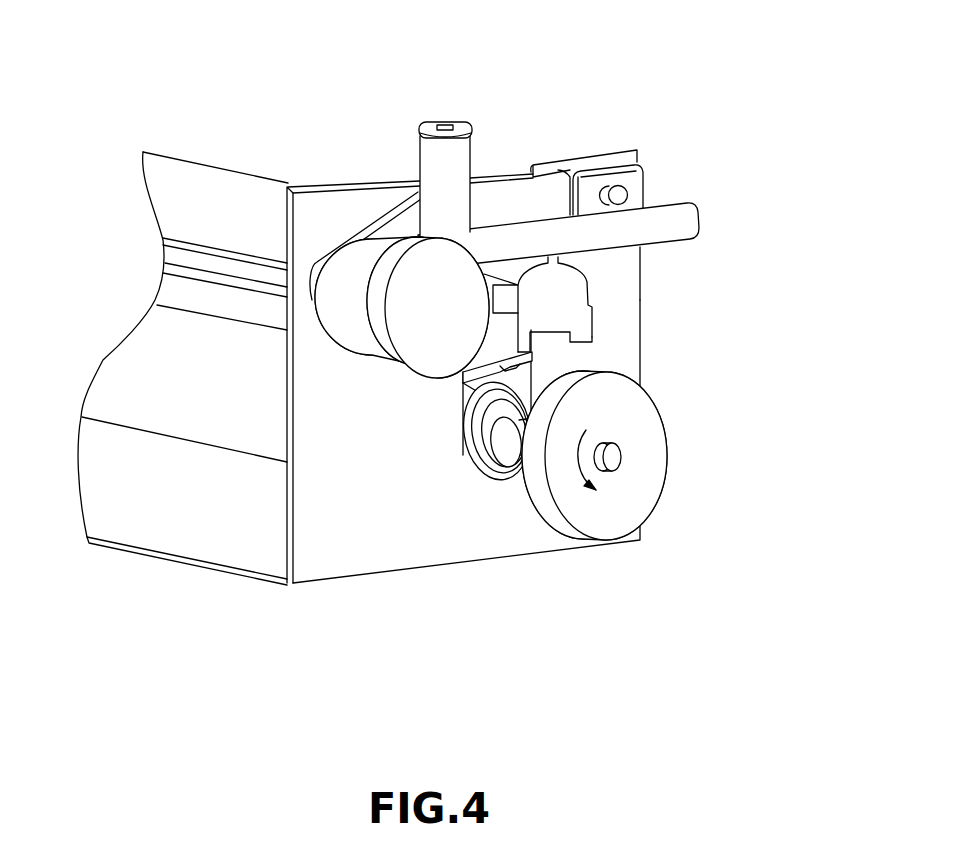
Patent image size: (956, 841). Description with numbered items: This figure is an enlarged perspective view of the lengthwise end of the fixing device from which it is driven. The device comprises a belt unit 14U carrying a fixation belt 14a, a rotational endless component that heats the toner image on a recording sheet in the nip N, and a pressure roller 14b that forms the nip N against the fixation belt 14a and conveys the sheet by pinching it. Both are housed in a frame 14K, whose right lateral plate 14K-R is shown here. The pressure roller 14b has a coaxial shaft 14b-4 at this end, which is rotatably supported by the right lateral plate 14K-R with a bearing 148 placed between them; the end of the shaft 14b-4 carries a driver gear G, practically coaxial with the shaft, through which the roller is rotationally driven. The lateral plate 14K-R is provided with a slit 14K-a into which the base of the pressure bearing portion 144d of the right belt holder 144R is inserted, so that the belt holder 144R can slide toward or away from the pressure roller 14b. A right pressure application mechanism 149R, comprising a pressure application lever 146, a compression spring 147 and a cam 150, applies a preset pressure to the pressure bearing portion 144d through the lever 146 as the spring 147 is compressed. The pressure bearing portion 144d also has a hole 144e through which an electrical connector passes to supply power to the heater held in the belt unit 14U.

The belt unit 14U is at (190, 193).
The fixation belt 14a is at (233, 187).
The pressure roller 14b is at (207, 410).
The shaft 14b-4 is at (505, 443).
The frame 14K is at (200, 575).
The slit 14K-a is at (525, 170).
The right lateral plate 14K-R is at (620, 283).
The nip N is at (197, 312).
The pressure application lever 146 is at (678, 221).
The compression spring 147 is at (432, 167).
The bearing 148 is at (485, 467).
The right pressure application mechanism 149R is at (677, 163).
The cam 150 is at (333, 348).
The pressure bearing portion 144d is at (565, 315).
The right belt holder 144R is at (657, 304).
The hole 144e is at (547, 347).
The driver gear G is at (643, 476).